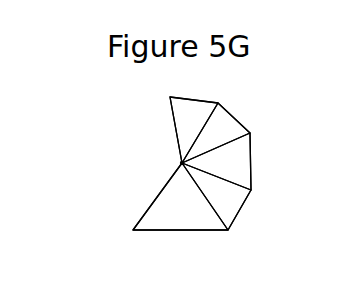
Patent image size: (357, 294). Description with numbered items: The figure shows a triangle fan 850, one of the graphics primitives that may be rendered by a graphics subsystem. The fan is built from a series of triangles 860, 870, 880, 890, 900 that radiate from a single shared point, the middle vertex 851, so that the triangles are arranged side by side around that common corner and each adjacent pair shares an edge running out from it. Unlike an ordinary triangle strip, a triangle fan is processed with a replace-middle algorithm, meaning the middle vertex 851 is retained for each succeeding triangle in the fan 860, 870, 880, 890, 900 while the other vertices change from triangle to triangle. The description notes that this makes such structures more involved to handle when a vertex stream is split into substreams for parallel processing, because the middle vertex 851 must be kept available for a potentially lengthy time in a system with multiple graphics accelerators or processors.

The triangle fan 850 is at (90, 171).
The middle vertex 851 is at (180, 164).
The triangle 860 is at (183, 202).
The triangle 870 is at (220, 200).
The triangle 880 is at (227, 163).
The triangle 890 is at (215, 135).
The triangle 900 is at (188, 130).